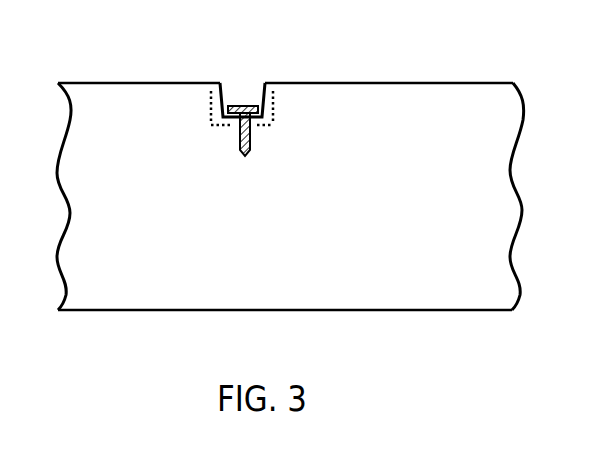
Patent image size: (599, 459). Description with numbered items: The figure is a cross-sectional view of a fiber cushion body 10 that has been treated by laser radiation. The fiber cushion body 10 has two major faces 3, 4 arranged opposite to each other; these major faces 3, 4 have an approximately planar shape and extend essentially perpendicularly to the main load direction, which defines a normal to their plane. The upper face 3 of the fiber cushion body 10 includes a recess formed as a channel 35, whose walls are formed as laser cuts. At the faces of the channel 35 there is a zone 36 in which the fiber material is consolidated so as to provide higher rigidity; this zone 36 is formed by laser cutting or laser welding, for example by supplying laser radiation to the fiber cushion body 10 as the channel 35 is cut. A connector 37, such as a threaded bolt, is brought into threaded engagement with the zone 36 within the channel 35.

The fiber cushion body 10 is at (276, 191).
The major face 3 is at (110, 83).
The major face 4 is at (118, 312).
The channel 35 is at (226, 83).
The zone 36 is at (273, 126).
The connector 37 is at (237, 158).